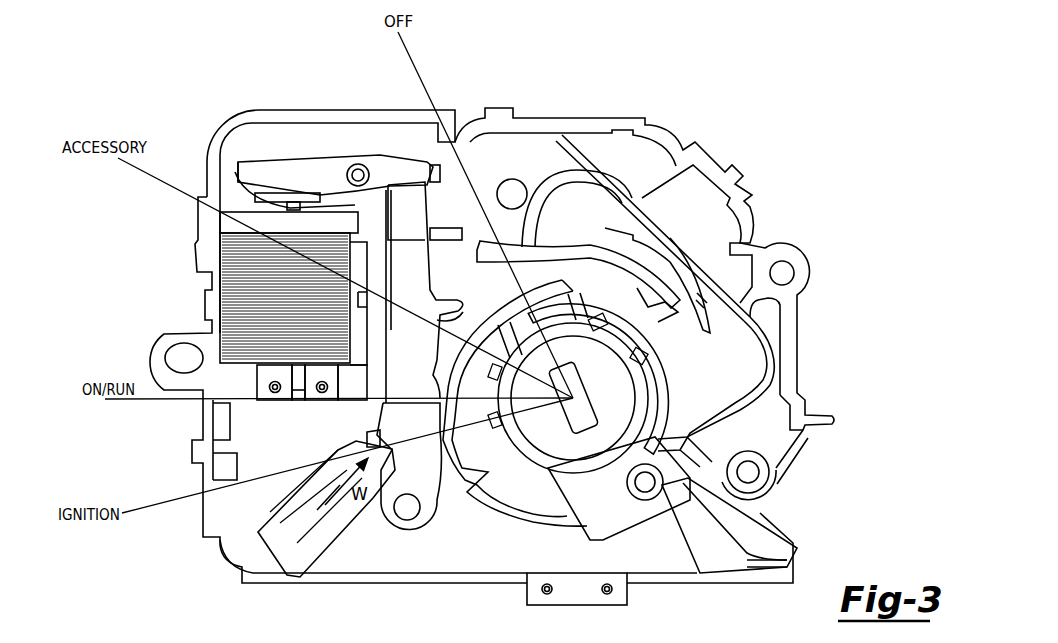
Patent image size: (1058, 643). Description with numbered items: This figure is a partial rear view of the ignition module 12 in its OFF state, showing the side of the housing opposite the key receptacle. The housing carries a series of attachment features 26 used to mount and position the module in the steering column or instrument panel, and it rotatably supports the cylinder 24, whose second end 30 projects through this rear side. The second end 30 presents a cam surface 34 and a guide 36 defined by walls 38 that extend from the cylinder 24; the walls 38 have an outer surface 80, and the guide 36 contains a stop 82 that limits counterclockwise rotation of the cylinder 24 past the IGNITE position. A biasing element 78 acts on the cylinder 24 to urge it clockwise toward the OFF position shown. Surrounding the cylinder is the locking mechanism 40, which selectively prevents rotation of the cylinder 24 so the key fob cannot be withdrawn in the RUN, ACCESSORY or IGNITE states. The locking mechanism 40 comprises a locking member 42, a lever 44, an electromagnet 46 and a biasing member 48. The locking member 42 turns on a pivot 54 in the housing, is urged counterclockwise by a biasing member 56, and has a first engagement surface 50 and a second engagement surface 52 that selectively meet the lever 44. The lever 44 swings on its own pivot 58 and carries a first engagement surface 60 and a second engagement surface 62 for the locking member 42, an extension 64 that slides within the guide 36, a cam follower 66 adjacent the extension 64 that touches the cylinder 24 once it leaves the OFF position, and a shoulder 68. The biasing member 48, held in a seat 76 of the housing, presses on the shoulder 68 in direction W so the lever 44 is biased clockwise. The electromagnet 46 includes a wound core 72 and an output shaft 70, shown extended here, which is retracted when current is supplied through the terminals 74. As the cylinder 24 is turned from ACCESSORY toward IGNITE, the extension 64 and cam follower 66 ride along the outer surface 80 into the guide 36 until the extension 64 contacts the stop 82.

The ignition module 12 is at (755, 135).
The cylinder 24 is at (680, 380).
The attachment features 26 is at (777, 252).
The second end 30 is at (540, 433).
The cam surface 34 is at (437, 413).
The guide 36 is at (640, 307).
The walls 38 is at (578, 290).
The locking mechanism 40 is at (336, 148).
The locking member 42 is at (288, 170).
The lever 44 is at (417, 205).
The electromagnet 46 is at (248, 318).
The biasing member 48 is at (300, 517).
The first engagement surface 50 is at (380, 182).
The second engagement surface 52 is at (440, 177).
The pivot 54 is at (347, 173).
The biasing member 56 is at (258, 196).
The pivot 58 is at (412, 512).
The first engagement surface 60 is at (408, 183).
The second engagement surface 62 is at (385, 237).
The extension 64 is at (457, 298).
The cam follower 66 is at (437, 365).
The shoulder 68 is at (366, 432).
The output shaft 70 is at (287, 207).
The wound core 72 is at (215, 257).
The terminals 74 is at (268, 387).
The seat 76 is at (317, 550).
The biasing element 78 is at (723, 450).
The outer surface 80 is at (488, 320).
The stop 82 is at (668, 312).